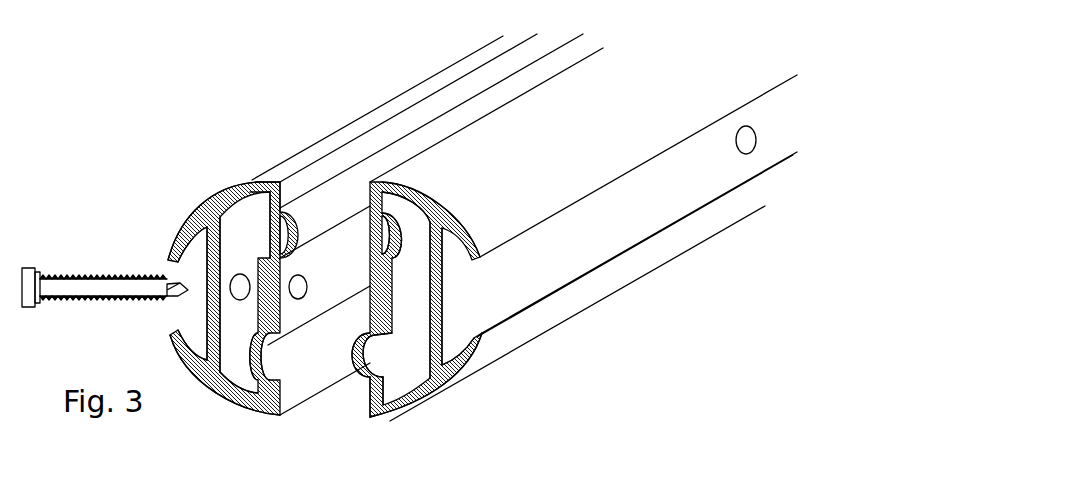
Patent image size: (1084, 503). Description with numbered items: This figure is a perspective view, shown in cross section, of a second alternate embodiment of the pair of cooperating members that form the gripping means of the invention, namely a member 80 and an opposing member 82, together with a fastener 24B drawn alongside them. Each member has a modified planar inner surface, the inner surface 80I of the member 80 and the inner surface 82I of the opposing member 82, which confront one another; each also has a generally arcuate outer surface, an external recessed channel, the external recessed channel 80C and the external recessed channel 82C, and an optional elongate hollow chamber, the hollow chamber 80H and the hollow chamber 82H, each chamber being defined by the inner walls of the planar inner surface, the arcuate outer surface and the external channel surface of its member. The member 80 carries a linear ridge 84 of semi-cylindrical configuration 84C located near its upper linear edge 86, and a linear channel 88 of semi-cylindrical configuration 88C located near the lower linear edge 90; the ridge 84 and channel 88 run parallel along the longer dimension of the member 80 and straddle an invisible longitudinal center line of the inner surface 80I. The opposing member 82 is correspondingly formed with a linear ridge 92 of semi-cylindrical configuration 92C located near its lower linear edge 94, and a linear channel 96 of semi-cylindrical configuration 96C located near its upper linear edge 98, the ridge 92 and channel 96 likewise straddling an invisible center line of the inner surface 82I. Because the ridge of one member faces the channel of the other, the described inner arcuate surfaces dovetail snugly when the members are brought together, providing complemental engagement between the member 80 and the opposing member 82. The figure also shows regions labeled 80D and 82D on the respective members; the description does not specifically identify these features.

The screw fastener 24B is at (72, 277).
The member 80 is at (257, 180).
The external recessed channel 80C is at (207, 276).
The detent of bracket 80D is at (202, 212).
The hollow chamber 80H is at (250, 183).
The inner surface 80I is at (281, 312).
The linear ridge 84 is at (233, 182).
The semi-cylindrical configuration 84C is at (308, 194).
The upper linear edge 86 is at (388, 101).
The linear channel 88 is at (210, 393).
The semi-cylindrical configuration 88C is at (294, 400).
The lower linear edge 90 is at (307, 399).
The opposing member 82 is at (692, 250).
The external recessed channel 82C is at (458, 312).
The lower flange of rail 82D is at (484, 343).
The hollow chamber 82H is at (483, 251).
The inner surface 82I is at (348, 300).
The linear ridge 92 is at (390, 357).
The semi-cylindrical configuration 92C is at (356, 371).
The lower linear edge 94 is at (373, 420).
The linear channel 96 is at (378, 238).
The semi-cylindrical configuration 96C is at (434, 206).
The upper linear edge 98 is at (510, 100).